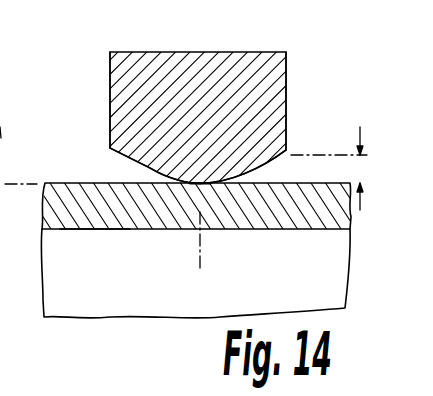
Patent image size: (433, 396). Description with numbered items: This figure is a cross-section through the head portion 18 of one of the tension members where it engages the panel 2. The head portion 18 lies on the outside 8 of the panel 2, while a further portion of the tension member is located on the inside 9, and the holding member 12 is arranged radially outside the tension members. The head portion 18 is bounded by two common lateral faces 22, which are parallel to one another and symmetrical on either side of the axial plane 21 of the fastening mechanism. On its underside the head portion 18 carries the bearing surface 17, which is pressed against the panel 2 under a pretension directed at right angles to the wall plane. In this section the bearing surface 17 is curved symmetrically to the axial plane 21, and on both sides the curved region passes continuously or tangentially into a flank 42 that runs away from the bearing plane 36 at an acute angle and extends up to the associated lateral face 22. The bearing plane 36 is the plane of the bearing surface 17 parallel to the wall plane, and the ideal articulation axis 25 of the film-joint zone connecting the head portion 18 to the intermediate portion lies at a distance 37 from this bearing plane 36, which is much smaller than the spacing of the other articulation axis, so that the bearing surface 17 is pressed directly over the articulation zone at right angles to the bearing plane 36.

The head portion 18 is at (217, 72).
The lateral faces 22 is at (110, 80).
The flank 42 is at (140, 163).
The articulation axis 25 is at (333, 155).
The distance 37 is at (376, 168).
The bearing plane 36 is at (39, 164).
The outside 8 is at (67, 177).
The panel 2 is at (50, 207).
The holding member 12 is at (50, 263).
The inside 9 is at (97, 232).
The bearing surface 17 is at (200, 183).
The axial plane 21 is at (200, 255).